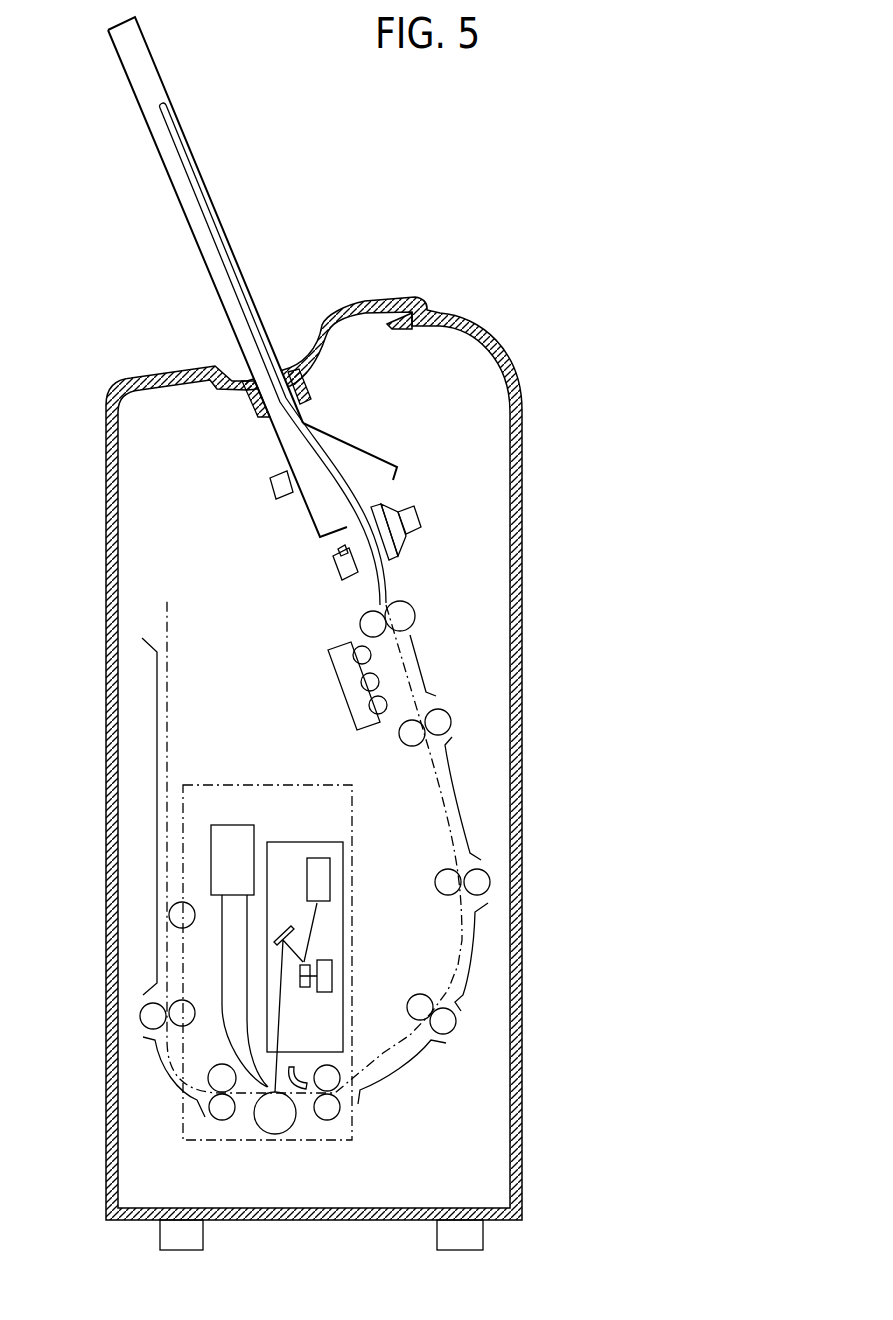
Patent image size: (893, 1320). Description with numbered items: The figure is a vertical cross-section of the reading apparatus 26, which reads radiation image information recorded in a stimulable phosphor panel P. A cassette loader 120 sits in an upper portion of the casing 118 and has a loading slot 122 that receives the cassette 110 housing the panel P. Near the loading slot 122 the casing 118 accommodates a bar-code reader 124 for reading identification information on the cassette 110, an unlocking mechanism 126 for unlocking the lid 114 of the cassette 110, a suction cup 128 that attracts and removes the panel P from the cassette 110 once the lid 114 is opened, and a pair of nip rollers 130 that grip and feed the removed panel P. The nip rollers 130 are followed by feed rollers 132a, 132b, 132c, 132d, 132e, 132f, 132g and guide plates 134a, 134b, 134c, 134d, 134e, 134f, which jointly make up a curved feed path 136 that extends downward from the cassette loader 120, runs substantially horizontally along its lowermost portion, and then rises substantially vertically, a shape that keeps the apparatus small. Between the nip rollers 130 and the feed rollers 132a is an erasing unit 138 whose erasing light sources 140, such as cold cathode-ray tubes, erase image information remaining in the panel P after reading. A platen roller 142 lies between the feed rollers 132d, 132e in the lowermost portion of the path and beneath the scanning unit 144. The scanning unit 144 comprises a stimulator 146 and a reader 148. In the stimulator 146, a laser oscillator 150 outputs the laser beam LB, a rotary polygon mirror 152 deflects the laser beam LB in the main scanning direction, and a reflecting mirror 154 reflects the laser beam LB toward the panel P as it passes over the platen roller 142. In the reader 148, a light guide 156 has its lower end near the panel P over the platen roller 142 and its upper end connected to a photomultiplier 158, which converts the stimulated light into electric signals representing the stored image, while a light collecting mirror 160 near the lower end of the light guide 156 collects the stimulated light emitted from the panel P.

The reading apparatus 26 is at (317, 633).
The cassette 110 is at (227, 277).
The stimulable phosphor panel P is at (273, 354).
The lid 114 is at (353, 443).
The casing 118 is at (346, 773).
The cassette loader 120 is at (230, 428).
The loading slot 122 is at (331, 374).
The bar-code reader 124 is at (246, 502).
The unlocking mechanism 126 is at (311, 579).
The suction cup 128 is at (408, 546).
The nip rollers 130 is at (417, 616).
The curved feed path 136 is at (372, 846).
The erasing unit 138 is at (322, 668).
The erasing light sources 140 is at (342, 688).
The feed rollers 132a is at (448, 711).
The feed rollers 132b is at (447, 867).
The feed rollers 132c is at (455, 1035).
The feed rollers 132d is at (346, 1126).
The feed rollers 132e is at (225, 1123).
The feed rollers 132f is at (121, 1019).
The feed rollers 132g is at (121, 919).
The guide plates 134a is at (455, 665).
The guide plates 134b is at (478, 798).
The guide plates 134c is at (483, 966).
The guide plates 134d is at (412, 1074).
The guide plates 134e is at (164, 1093).
The guide plates 134f is at (102, 816).
The platen roller 142 is at (277, 1142).
The scanning unit 144 is at (292, 960).
The stimulator 146 is at (341, 947).
The reader 148 is at (256, 840).
The laser oscillator 150 is at (308, 854).
The rotary polygon mirror 152 is at (351, 975).
The reflecting mirror 154 is at (287, 913).
The light guide 156 is at (226, 991).
The photomultiplier 158 is at (225, 843).
The light collecting mirror 160 is at (312, 1054).
The laser beam LB is at (303, 997).